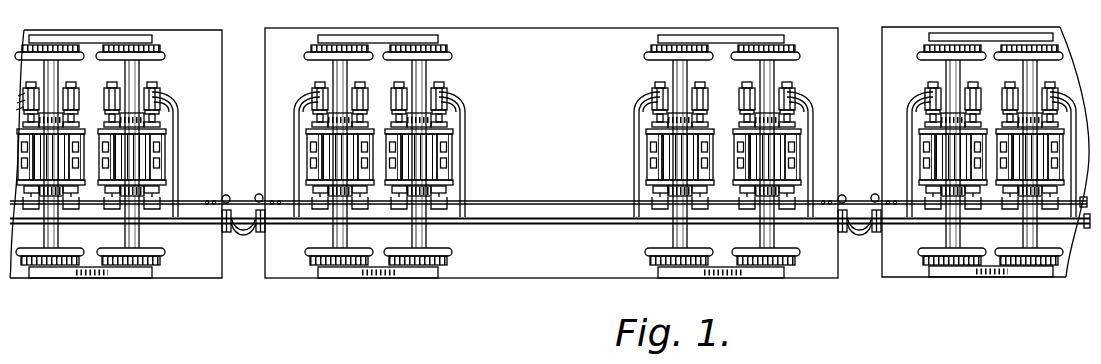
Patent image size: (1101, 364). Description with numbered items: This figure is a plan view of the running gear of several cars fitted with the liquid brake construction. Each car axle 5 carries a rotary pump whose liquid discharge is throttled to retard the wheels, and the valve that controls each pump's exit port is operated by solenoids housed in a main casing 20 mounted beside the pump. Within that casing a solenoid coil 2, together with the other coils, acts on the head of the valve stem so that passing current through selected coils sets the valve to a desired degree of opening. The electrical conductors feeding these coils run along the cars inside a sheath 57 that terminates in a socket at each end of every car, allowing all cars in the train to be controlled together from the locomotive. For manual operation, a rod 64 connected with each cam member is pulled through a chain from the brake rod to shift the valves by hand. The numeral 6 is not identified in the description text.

The solenoid coil 2 is at (364, 150).
The car axle 5 is at (58, 238).
The drum 6 is at (304, 143).
The main casing 20 is at (318, 98).
The sheath 57 is at (540, 225).
The rod 64 is at (533, 200).